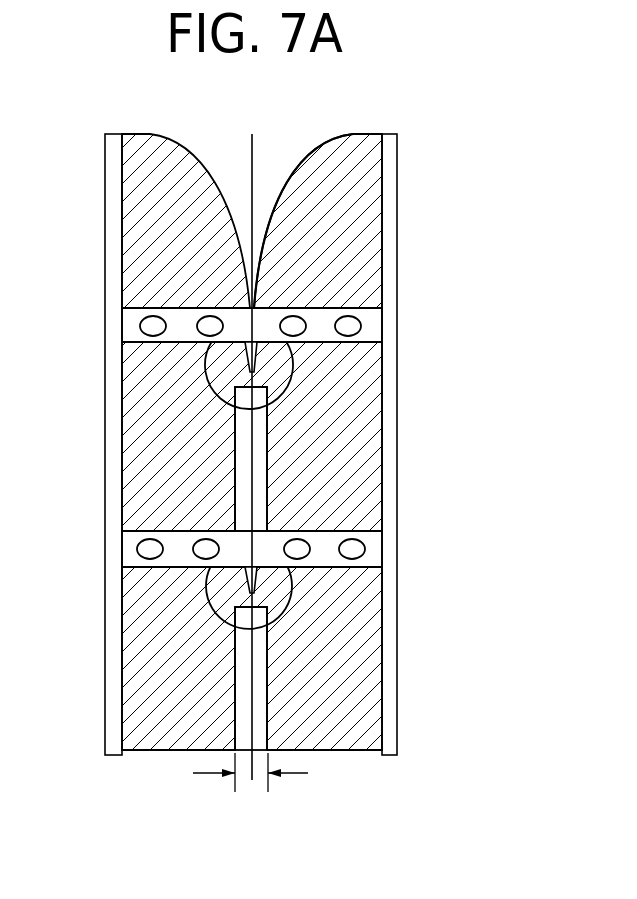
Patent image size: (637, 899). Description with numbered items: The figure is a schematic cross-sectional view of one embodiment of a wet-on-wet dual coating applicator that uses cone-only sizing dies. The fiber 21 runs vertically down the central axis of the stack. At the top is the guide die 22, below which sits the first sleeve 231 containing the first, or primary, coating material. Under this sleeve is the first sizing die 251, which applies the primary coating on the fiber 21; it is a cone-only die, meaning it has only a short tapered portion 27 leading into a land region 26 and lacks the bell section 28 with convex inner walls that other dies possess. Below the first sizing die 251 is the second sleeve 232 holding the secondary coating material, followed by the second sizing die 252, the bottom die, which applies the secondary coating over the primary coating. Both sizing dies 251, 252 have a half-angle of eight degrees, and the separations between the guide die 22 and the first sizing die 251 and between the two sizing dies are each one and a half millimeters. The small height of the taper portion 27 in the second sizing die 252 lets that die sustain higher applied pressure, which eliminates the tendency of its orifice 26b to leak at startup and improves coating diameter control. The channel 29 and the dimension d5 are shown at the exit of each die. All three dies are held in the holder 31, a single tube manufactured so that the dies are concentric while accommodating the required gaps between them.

The fiber 21 is at (254, 150).
The guide die 22 is at (362, 262).
The first sleeve 231 is at (370, 330).
The second sleeve 232 is at (372, 548).
The first sizing die 251 is at (363, 437).
The second sizing die 252 is at (363, 677).
The land region 26 is at (262, 387).
The orifice 26b is at (235, 626).
The tapered portion 27 is at (299, 358).
The bell section 28 is at (331, 173).
The nozzle channel 29 is at (270, 474).
The holder 31 is at (388, 740).
The channel width d5 is at (266, 774).